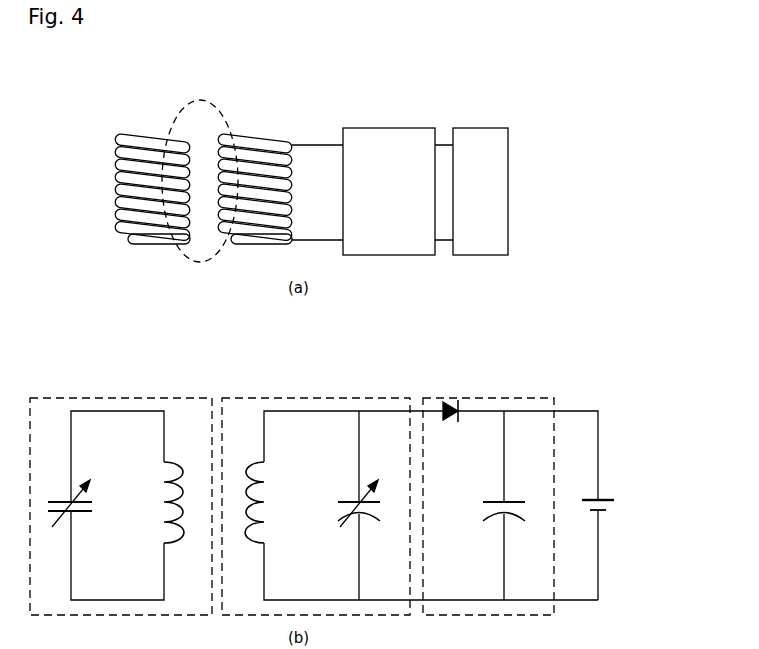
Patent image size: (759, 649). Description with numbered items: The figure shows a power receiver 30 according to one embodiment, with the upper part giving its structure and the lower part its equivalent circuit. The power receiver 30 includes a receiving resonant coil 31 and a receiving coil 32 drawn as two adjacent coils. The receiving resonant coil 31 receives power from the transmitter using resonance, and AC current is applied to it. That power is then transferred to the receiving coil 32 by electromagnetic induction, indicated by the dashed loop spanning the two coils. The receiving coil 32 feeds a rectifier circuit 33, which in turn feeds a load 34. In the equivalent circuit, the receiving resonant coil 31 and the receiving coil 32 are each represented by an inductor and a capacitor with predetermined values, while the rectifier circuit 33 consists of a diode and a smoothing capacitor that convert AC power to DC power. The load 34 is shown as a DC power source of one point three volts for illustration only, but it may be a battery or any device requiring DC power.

The power receiver 30 is at (103, 75).
The receiving resonant coil 31 is at (108, 152).
The receiving coil 32 is at (259, 143).
The rectifier circuit 33 is at (388, 128).
The load 34 is at (481, 128).